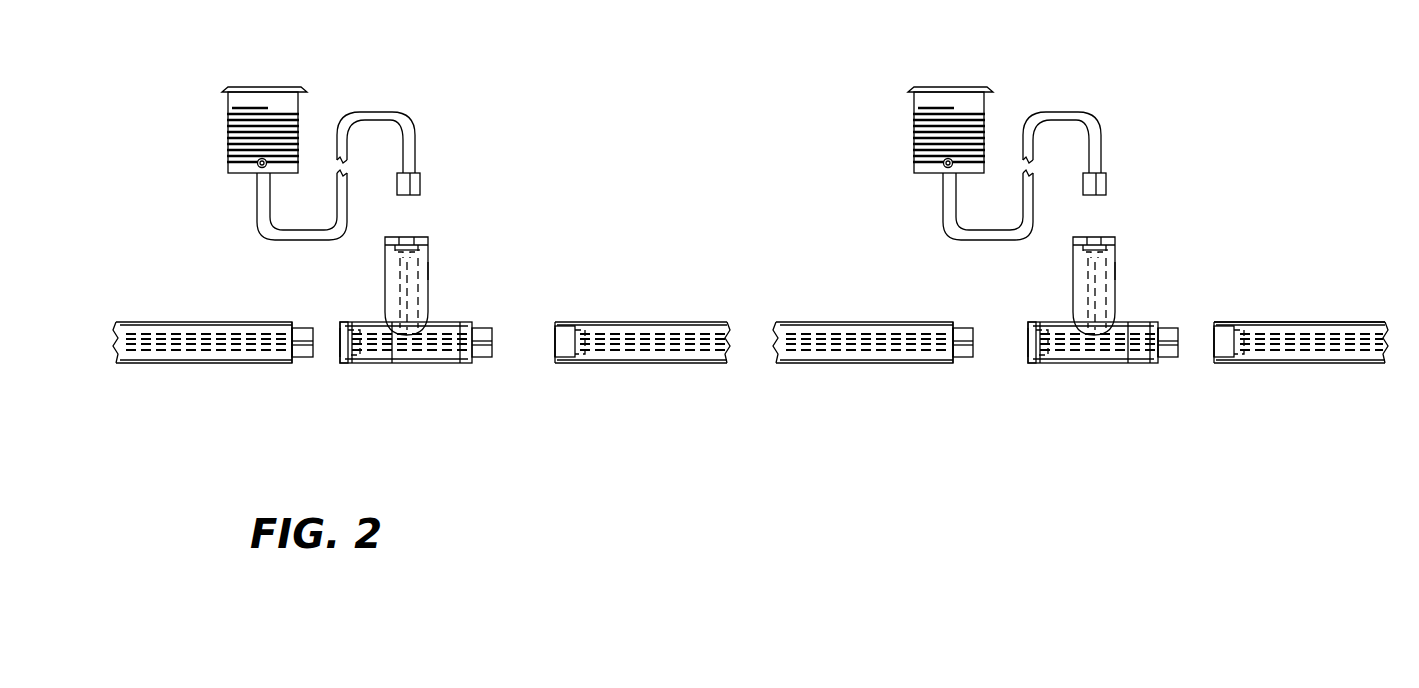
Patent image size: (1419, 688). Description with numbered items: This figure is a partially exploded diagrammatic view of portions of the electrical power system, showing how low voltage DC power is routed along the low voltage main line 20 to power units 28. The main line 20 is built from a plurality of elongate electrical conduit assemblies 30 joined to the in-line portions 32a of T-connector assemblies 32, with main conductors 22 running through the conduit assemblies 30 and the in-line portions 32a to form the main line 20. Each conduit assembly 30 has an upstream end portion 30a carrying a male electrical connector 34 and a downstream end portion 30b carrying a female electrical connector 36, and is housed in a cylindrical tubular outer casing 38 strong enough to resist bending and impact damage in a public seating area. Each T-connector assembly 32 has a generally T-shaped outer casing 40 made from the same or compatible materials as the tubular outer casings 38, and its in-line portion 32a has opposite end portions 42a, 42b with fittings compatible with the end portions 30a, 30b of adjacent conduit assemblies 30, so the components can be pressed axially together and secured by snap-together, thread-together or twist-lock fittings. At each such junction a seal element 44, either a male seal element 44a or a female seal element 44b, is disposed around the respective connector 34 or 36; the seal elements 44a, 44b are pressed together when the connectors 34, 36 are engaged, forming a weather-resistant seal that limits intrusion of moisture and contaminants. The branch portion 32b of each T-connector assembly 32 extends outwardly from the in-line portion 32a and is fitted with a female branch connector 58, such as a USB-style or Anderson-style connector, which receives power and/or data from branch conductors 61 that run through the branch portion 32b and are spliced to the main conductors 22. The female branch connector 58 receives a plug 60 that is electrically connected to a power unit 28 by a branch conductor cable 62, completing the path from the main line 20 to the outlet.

The low voltage main line 20 is at (175, 330).
The main conductors 22 is at (210, 335).
The power unit 28 is at (290, 87).
The electrical conduit assembly 30 is at (226, 372).
The upstream end portion 30a is at (577, 390).
The downstream end portion 30b is at (272, 380).
The T-connector assembly 32 is at (372, 390).
The in-line portion 32a is at (428, 365).
The branch portion 32b is at (428, 272).
The male electrical connector 34 is at (304, 328).
The female electrical connector 36 is at (350, 365).
The tubular outer casing 38 is at (168, 364).
The T-shaped outer casing 40 is at (393, 370).
The end portion of in-line portion 42a is at (481, 378).
The end portion of in-line portion 42b is at (360, 308).
The seal element 44 is at (422, 237).
The male seal element 44a is at (296, 363).
The female seal element 44b is at (342, 325).
The female branch connector 58 is at (428, 249).
The plug 60 is at (421, 183).
The branch conductors 61 is at (390, 275).
The branch conductor cable 62 is at (385, 112).